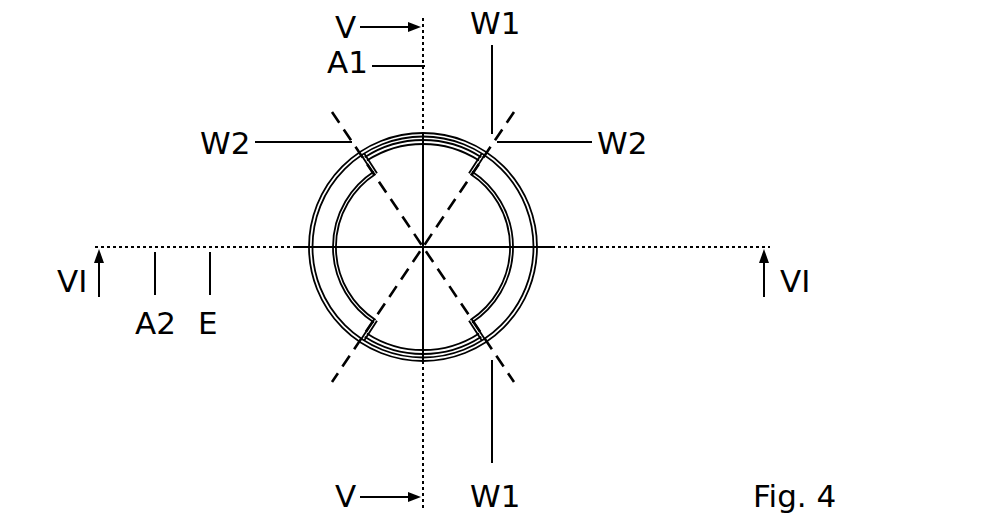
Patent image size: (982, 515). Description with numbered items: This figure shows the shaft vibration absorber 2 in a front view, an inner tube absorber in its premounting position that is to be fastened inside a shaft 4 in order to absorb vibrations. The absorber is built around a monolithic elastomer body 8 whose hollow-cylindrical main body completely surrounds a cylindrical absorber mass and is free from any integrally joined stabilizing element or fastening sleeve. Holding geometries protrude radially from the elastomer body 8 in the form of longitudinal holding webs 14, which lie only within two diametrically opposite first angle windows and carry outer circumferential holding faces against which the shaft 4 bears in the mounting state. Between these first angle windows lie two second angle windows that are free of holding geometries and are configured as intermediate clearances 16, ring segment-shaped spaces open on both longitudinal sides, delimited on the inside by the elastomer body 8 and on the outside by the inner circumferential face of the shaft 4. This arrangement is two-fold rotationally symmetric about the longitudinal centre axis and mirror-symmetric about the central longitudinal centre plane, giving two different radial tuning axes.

The shaft vibration absorber 2 is at (334, 187).
The shaft 4 is at (313, 213).
The elastomer body 8 is at (510, 224).
The longitudinal holding webs 14 is at (453, 136).
The intermediate clearances 16 is at (508, 190).